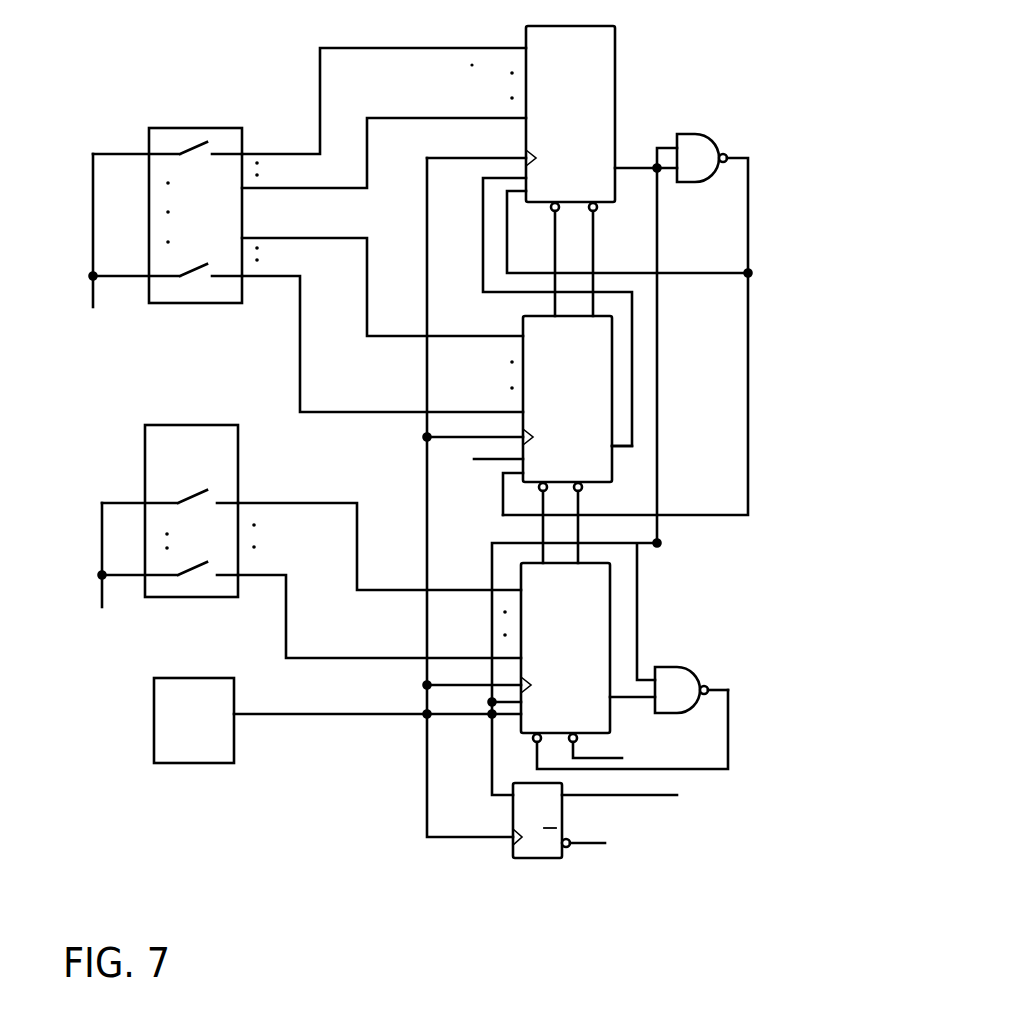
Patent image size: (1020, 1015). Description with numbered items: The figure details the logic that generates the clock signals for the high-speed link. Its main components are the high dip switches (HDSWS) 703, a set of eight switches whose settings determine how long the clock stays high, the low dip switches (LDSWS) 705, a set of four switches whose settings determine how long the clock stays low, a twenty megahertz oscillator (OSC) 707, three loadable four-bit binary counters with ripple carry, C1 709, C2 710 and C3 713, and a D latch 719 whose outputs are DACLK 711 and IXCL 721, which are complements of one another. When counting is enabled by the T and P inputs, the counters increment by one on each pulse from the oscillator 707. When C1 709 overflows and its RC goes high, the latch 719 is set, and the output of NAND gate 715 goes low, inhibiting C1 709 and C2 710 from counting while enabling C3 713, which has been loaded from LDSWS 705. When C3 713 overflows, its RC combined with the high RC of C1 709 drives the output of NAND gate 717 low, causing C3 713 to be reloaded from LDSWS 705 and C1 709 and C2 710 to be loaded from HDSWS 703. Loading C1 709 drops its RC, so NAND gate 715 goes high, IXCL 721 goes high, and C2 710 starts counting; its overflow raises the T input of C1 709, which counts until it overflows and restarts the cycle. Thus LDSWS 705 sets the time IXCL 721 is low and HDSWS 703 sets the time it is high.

The high dip switches 703 is at (299, 230).
The low dip switches 705 is at (301, 526).
The oscillator 707 is at (337, 720).
The binary counter C1 709 is at (587, 236).
The binary counter C2 710 is at (528, 439).
The binary counter C3 713 is at (576, 666).
The NAND gate 715 is at (698, 132).
The NAND gate 717 is at (673, 668).
The D latch 719 is at (545, 859).
The DACLK 711 is at (671, 796).
The IXCL 721 is at (635, 843).